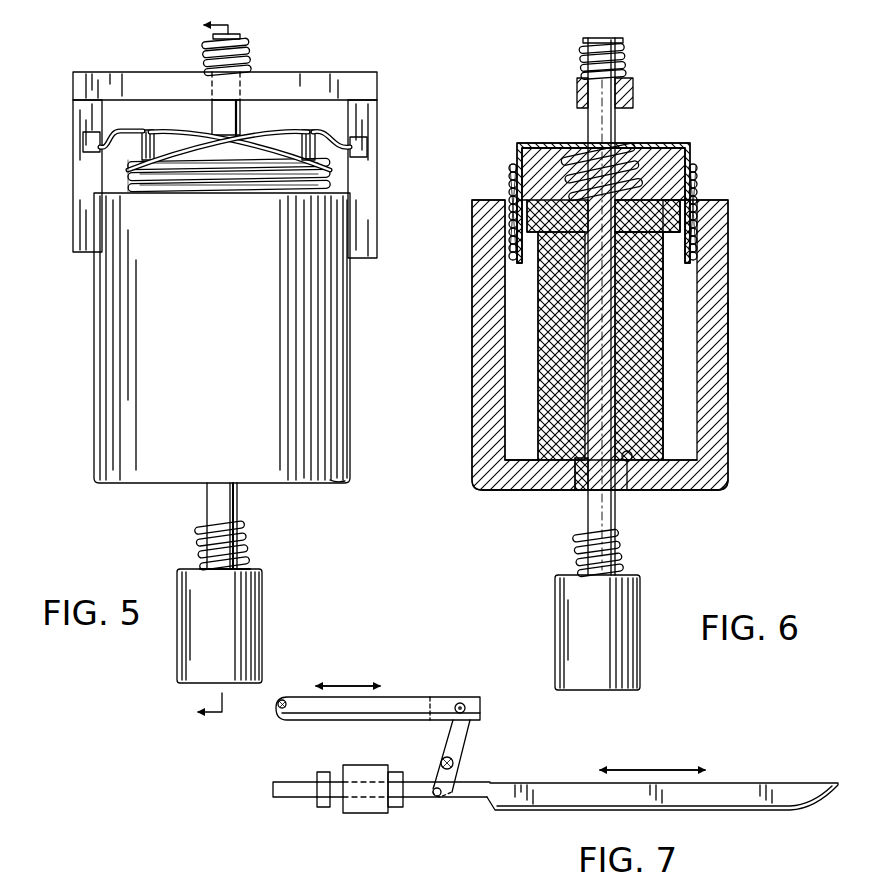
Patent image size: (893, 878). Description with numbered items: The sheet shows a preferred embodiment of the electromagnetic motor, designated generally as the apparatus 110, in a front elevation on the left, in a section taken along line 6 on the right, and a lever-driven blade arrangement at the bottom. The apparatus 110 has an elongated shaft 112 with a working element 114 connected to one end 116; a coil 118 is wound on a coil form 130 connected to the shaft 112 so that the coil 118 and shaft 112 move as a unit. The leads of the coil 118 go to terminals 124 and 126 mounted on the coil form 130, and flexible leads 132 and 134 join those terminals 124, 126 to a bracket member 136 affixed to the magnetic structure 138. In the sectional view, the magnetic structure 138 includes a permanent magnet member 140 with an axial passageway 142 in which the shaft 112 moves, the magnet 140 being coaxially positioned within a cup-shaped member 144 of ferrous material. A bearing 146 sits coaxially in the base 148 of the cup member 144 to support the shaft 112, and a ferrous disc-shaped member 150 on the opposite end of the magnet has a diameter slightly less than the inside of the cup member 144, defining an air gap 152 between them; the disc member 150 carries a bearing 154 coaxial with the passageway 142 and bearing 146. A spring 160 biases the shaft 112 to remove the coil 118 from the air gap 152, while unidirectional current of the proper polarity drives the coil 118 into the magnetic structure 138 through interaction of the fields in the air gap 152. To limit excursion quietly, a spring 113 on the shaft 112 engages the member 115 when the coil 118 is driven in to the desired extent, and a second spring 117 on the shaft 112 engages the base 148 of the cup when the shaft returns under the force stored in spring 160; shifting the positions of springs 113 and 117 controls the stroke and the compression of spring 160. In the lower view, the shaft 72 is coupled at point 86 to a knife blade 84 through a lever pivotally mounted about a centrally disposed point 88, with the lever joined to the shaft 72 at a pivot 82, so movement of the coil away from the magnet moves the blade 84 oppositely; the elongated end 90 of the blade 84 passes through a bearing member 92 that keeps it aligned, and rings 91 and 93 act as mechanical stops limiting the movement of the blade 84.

In FIG. 5, the section line 6 is at (204, 369).
In FIG. 5, the apparatus 110 is at (92, 458).
In FIG. 5, the elongated shaft 112 is at (216, 108).
In FIG. 6, the elongated shaft 112 is at (596, 96).
In FIG. 5, the spring 113 is at (250, 55).
In FIG. 6, the spring 113 is at (626, 62).
In FIG. 5, the working element 114 is at (262, 616).
In FIG. 6, the working element 114 is at (638, 630).
In FIG. 5, the member 115 is at (366, 74).
In FIG. 5, the end 116 is at (248, 570).
In FIG. 5, the second spring 117 is at (200, 526).
In FIG. 6, the second spring 117 is at (578, 550).
In FIG. 5, the coil 118 is at (330, 187).
In FIG. 6, the coil 118 is at (697, 174).
In FIG. 5, the terminal 124 is at (144, 130).
In FIG. 5, the terminal 126 is at (306, 130).
In FIG. 5, the coil form 130 is at (136, 152).
In FIG. 6, the coil form 130 is at (660, 143).
In FIG. 5, the flexible lead 132 is at (330, 130).
In FIG. 5, the flexible lead 134 is at (112, 135).
In FIG. 5, the bracket member 136 is at (378, 128).
In FIG. 5, the magnetic structure 138 is at (350, 345).
In FIG. 6, the magnetic structure 138 is at (728, 350).
In FIG. 6, the permanent magnet member 140 is at (545, 455).
In FIG. 6, the axial passageway 142 is at (627, 462).
In FIG. 6, the cup-shaped member 144 is at (728, 426).
In FIG. 6, the bearing 146 is at (580, 490).
In FIG. 5, the base 148 is at (327, 482).
In FIG. 6, the base 148 is at (710, 490).
In FIG. 6, the disc-shaped member 150 is at (680, 205).
In FIG. 6, the air gap 152 is at (512, 205).
In FIG. 6, the bearing 154 is at (628, 212).
In FIG. 6, the spring 160 is at (572, 150).
In FIG. 7, the shaft 72 is at (452, 700).
In FIG. 7, the pivot pin 82 is at (468, 704).
In FIG. 7, the knife blade 84 is at (755, 783).
In FIG. 7, the point 86 is at (438, 797).
In FIG. 7, the centrally disposed point 88 is at (454, 763).
In FIG. 7, the end 90 is at (273, 784).
In FIG. 7, the ring 91 is at (322, 772).
In FIG. 7, the bearing member 92 is at (388, 750).
In FIG. 7, the ring 93 is at (396, 807).